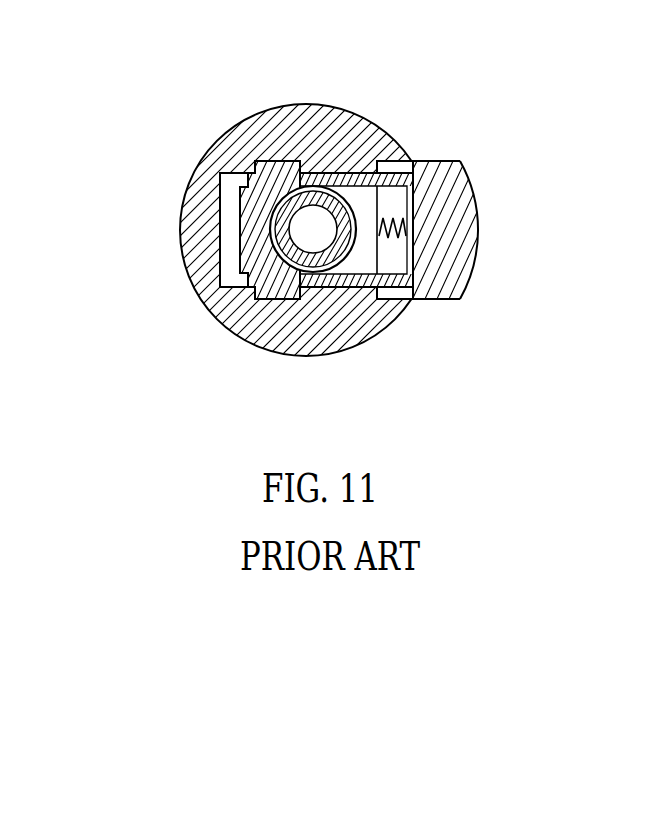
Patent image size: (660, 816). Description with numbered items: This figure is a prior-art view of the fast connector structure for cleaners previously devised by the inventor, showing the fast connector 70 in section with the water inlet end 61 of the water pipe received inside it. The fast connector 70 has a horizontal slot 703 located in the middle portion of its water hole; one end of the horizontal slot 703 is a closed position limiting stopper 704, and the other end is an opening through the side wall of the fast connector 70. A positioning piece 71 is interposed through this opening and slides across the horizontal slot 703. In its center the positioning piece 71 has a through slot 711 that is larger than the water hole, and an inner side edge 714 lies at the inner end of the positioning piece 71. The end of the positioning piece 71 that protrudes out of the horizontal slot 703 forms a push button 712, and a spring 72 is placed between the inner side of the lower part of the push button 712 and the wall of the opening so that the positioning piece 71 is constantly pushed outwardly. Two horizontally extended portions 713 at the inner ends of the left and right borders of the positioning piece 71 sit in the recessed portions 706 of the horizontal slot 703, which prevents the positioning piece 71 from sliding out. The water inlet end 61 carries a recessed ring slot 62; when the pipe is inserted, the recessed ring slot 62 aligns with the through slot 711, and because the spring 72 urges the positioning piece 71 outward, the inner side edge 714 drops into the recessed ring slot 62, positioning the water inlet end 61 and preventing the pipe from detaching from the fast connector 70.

The fast connector 70 is at (337, 217).
The water inlet end 61 is at (275, 289).
The closed position limiting stopper 704 is at (219, 203).
The inner side edge 714 is at (180, 230).
The recessed ring slot 62 is at (268, 229).
The recessed portions 706 is at (262, 166).
The horizontally extended portions 713 is at (297, 172).
The horizontal slot 703 is at (338, 288).
The through slot 711 is at (400, 165).
The spring 72 is at (405, 238).
The push button 712 is at (456, 188).
The positioning piece 71 is at (478, 236).